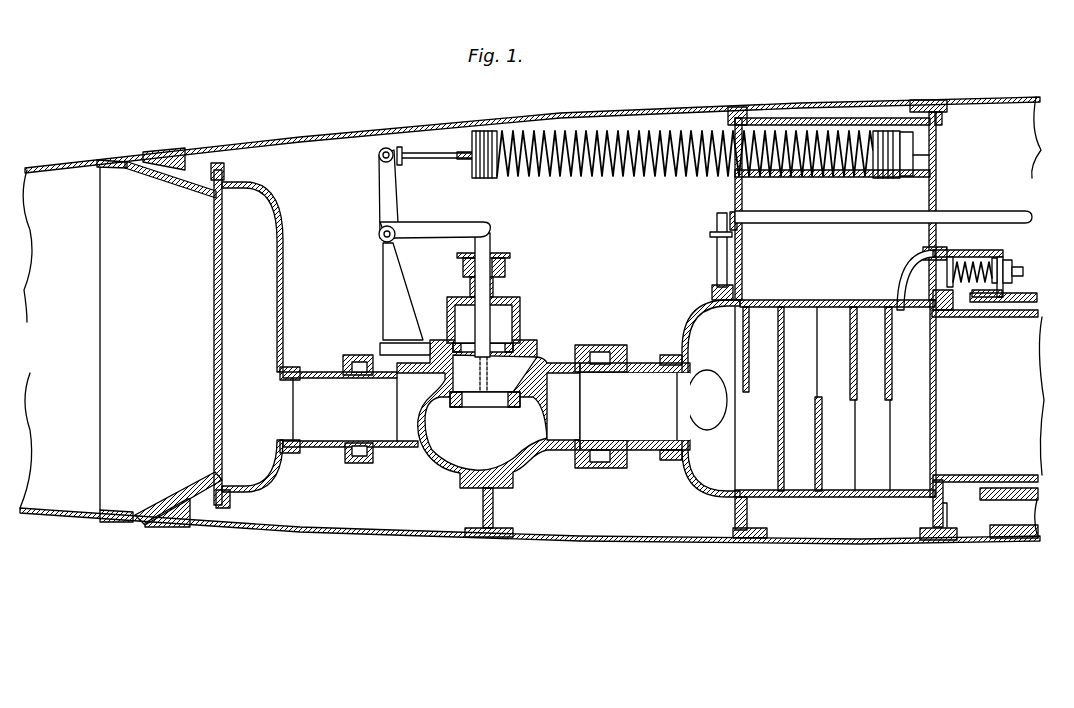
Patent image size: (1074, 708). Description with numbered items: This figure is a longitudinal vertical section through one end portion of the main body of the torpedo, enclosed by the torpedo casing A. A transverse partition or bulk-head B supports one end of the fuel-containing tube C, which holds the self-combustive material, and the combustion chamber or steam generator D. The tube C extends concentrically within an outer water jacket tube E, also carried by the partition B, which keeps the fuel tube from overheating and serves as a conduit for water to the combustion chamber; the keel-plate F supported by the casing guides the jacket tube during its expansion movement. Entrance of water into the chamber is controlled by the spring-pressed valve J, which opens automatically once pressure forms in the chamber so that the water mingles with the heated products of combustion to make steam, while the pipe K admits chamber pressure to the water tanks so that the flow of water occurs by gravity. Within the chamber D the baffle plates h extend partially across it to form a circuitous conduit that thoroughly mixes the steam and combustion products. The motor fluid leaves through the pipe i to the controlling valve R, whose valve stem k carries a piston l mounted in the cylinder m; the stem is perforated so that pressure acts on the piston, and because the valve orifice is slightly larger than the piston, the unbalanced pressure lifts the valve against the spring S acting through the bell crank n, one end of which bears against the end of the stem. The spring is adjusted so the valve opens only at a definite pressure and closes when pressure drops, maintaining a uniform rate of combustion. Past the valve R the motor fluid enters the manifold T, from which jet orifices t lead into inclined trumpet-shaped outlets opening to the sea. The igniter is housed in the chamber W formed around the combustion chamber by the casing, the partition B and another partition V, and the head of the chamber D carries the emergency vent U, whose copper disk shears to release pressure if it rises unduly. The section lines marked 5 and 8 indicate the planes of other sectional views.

The torpedo casing A is at (637, 110).
The transverse partition or bulk-head B is at (936, 185).
The fuel-containing tube C is at (998, 315).
The combustion chamber D is at (833, 303).
The water jacket tube E is at (1018, 298).
The keel-plate F is at (995, 527).
The spring-pressed valve J is at (960, 255).
The pipe K is at (715, 262).
The controlling valve R is at (488, 438).
The spring S is at (580, 166).
The manifold T is at (252, 337).
The emergency vent U is at (808, 419).
The partition V is at (743, 260).
The igniter chamber W is at (829, 180).
The baffle plates h is at (749, 365).
The pipe i is at (632, 406).
The valve stem k is at (492, 292).
The piston l is at (497, 347).
The cylinder m is at (520, 314).
The bell crank n is at (393, 196).
The jet orifices t is at (196, 190).
The section line 5- 5 is at (212, 478).
The section line 8- 8 is at (770, 572).